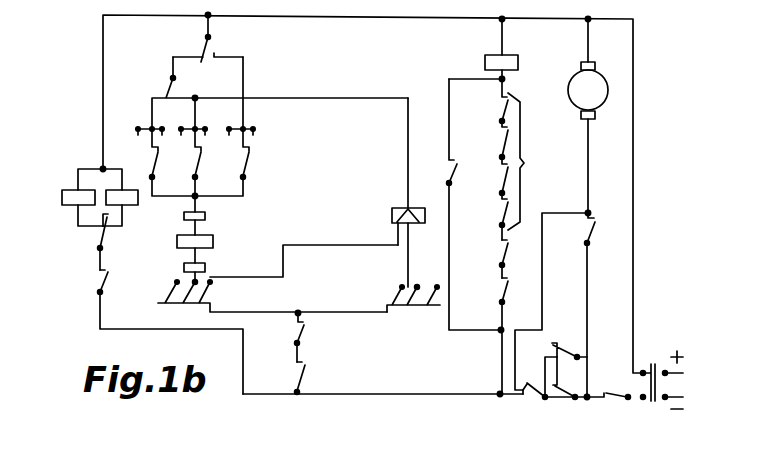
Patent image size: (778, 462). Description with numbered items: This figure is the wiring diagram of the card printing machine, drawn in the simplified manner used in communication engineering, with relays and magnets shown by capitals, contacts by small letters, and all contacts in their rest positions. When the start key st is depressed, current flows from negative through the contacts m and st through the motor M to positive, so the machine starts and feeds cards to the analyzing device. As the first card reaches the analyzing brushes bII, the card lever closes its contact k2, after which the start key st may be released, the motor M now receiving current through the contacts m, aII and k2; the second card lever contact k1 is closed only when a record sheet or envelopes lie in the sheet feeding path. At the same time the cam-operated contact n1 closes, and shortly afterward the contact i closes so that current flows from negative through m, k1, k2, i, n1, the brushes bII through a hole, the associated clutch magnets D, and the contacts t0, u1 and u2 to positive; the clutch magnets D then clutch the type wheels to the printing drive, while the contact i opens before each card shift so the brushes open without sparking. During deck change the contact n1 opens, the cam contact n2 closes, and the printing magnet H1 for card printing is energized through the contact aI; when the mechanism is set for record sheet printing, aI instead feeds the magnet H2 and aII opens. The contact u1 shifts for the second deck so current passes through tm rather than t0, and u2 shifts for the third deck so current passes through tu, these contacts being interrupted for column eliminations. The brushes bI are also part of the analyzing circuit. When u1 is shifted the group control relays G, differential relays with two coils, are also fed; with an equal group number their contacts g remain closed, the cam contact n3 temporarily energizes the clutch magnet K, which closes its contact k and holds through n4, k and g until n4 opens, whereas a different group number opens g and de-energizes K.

The contact u2 is at (208, 38).
The contact u1 is at (280, 93).
The contact to t0 is at (165, 161).
The contact tm is at (201, 161).
The contact tu is at (231, 161).
The printing magnet H2 is at (74, 197).
The printing magnet H1 is at (125, 197).
The contact aI is at (110, 242).
The cam contact n2 is at (170, 332).
The clutch magnets D is at (224, 239).
The analyzing brushes bII is at (278, 278).
The brushes bI is at (404, 297).
The group control relays G is at (420, 192).
The contact n1 is at (311, 337).
The contact i is at (383, 378).
The clutch magnet K is at (487, 50).
The motor M is at (588, 116).
The cam contact n3 is at (474, 204).
The contacts g is at (535, 159).
The contact k is at (510, 259).
The cam contact n4 is at (514, 336).
The start key st is at (565, 303).
The contact aII is at (569, 343).
The card lever contact k2 is at (540, 378).
The card lever contact k1 is at (567, 378).
The contact m is at (608, 387).